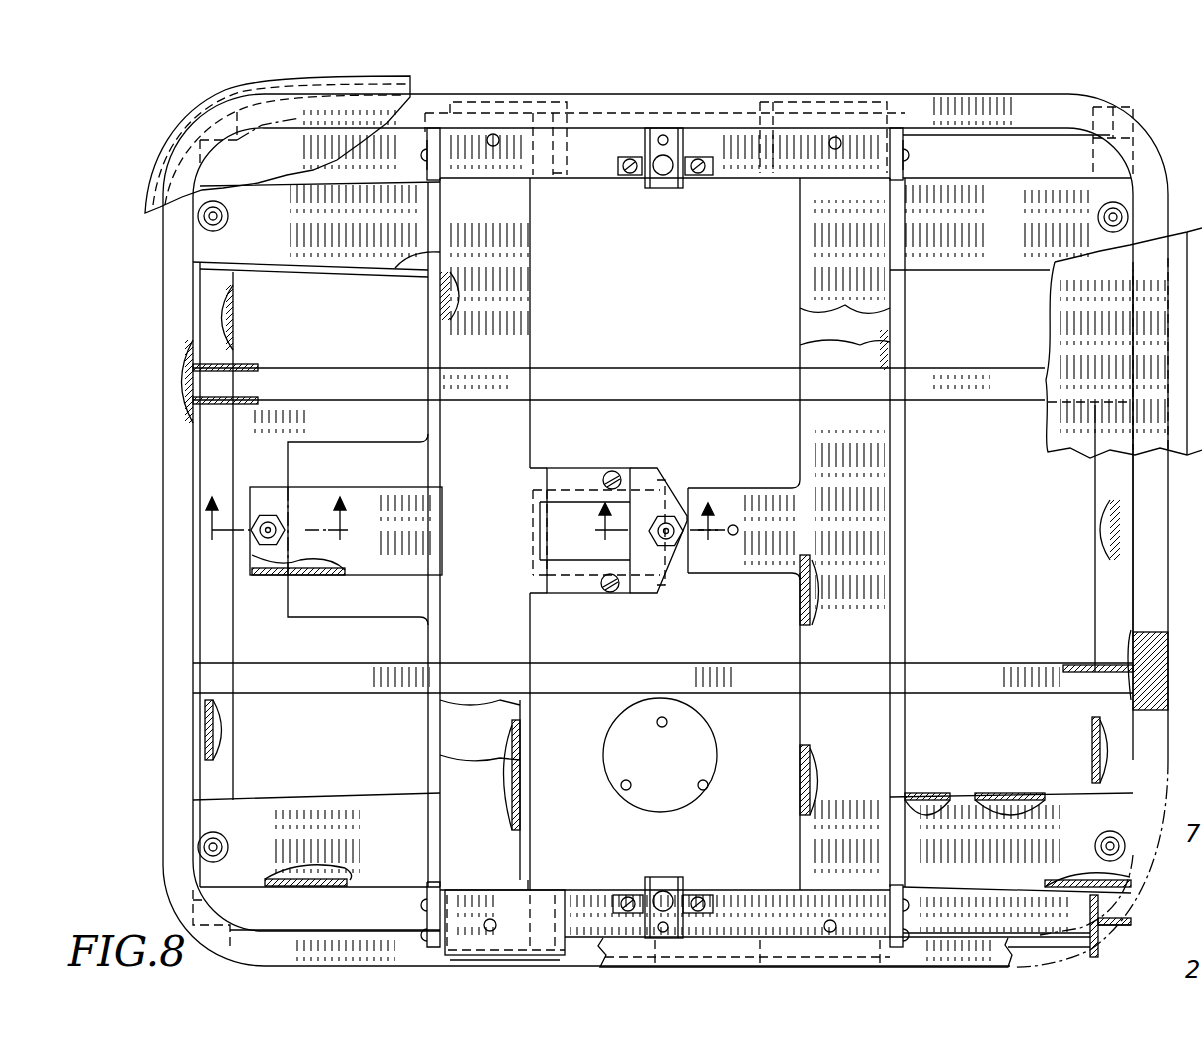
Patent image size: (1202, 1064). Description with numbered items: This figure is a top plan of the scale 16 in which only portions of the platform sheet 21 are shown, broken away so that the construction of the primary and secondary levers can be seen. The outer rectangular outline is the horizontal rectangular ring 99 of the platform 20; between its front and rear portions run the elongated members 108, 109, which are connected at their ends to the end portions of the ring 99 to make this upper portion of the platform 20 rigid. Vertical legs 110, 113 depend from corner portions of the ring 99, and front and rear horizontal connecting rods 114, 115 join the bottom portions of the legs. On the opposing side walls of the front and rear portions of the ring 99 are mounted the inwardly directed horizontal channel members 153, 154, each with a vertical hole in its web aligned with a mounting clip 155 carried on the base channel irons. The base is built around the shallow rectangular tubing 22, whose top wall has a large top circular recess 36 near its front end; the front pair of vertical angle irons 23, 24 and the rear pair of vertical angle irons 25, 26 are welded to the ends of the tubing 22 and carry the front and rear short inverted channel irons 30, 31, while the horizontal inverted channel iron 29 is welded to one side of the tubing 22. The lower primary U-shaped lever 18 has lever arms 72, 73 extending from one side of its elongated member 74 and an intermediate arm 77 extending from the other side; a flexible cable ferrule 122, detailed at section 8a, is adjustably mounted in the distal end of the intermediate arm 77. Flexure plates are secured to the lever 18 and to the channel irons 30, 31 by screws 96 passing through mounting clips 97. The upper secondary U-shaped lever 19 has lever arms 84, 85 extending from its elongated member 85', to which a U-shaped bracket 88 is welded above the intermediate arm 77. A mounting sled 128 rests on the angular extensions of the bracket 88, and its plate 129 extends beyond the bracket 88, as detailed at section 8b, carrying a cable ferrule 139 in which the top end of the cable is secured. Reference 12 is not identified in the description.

The scale 16 is at (146, 427).
The horizontal rectangular ring 99 is at (152, 822).
The platform sheet 21 is at (325, 160).
The platform 20 is at (503, 93).
The rear short inverted channel iron 31 is at (580, 182).
The rear vertical angle iron 25 is at (548, 97).
The rear vertical angle iron 26 is at (802, 98).
The vertical leg 113 is at (1108, 128).
The rear horizontal connecting rod 115 is at (962, 140).
The inwardly directed horizontal channel member 154 is at (663, 190).
The mounting clip 155 is at (706, 176).
The upper secondary U-shaped lever 19 is at (540, 298).
The lower primary U-shaped lever 18 is at (786, 300).
The lever arm 84 is at (318, 272).
The lever arm 73 is at (955, 275).
The elongated member 109 is at (592, 369).
The elongated member 108 is at (648, 664).
The horizontal inverted channel iron 29 is at (320, 442).
The flexible cable ferrule 122 is at (268, 515).
The section line 8a is at (284, 532).
The U-shaped bracket 88 is at (537, 468).
The mounting sled 128 is at (575, 468).
The plate 129 is at (636, 468).
The cable ferrule 139 is at (672, 545).
The section line 8b is at (656, 531).
The elongated member 74 is at (800, 428).
The intermediate arm 77 is at (724, 490).
The shallow rectangular tubing 22 is at (428, 731).
The lever arm 85 is at (316, 821).
The elongated member 85' is at (543, 795).
The lever arm 72 is at (992, 796).
The top circular recess 36 is at (700, 725).
The front short inverted channel iron 30 is at (575, 893).
The mounting clip 97 is at (434, 880).
The screw 96 is at (420, 935).
The inwardly directed horizontal channel member 153 is at (665, 878).
The front vertical angle iron 23 is at (512, 962).
The front vertical angle iron 24 is at (755, 950).
The front horizontal connecting rod 114 is at (1052, 935).
The vertical leg 110 is at (196, 905).
The cover piece 12 is at (1124, 469).